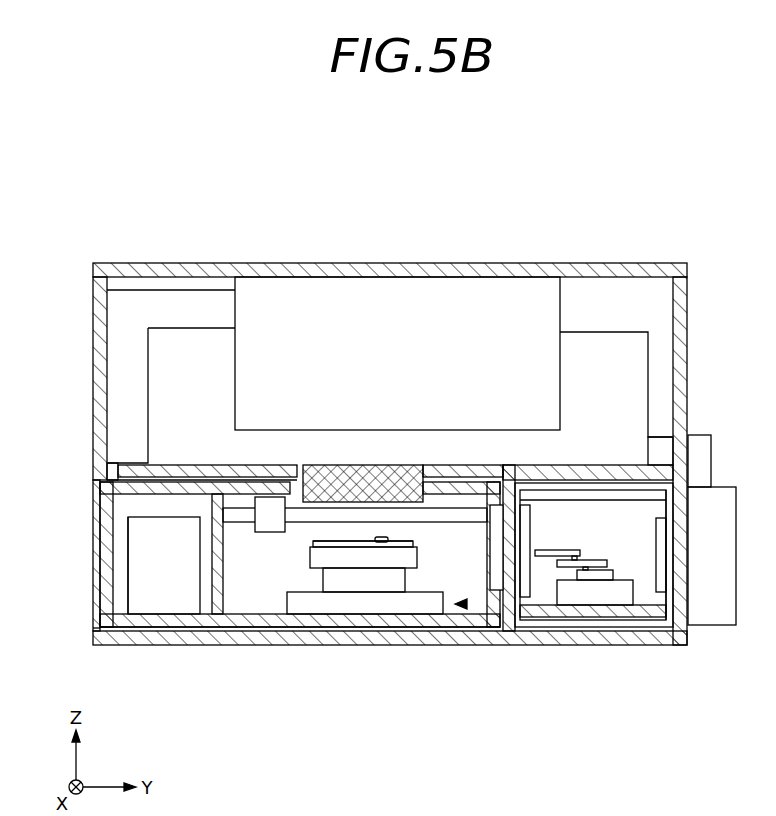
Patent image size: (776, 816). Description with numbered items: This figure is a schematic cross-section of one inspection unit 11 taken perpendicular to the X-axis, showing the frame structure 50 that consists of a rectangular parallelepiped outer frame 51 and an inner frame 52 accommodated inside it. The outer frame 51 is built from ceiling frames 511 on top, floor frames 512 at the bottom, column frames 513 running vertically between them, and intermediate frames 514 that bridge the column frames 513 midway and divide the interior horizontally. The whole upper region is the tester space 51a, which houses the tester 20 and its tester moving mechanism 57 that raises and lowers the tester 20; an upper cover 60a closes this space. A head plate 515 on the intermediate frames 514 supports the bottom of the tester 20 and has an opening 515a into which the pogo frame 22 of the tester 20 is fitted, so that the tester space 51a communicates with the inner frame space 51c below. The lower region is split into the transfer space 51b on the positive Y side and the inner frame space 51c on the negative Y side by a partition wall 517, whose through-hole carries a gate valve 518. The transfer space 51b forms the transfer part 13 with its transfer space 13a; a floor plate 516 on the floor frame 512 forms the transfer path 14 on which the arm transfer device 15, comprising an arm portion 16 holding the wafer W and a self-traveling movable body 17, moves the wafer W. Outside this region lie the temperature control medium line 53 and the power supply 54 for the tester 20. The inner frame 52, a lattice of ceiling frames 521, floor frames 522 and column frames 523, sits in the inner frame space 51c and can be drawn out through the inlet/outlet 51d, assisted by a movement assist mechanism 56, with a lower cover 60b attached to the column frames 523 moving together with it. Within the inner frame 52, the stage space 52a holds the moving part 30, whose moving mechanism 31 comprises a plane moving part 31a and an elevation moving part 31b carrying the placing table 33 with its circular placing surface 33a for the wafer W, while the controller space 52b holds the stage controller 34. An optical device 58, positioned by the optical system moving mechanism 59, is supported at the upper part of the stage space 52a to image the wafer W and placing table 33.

The inspection unit 11 is at (107, 215).
The transfer part 13 is at (586, 474).
The transfer space 13a is at (609, 596).
The transfer path 14 is at (533, 613).
The arm transfer device 15 is at (565, 692).
The arm portion 16 is at (572, 594).
The movable body 17 is at (602, 582).
The tester 20 is at (200, 345).
The pogo frame 22 is at (321, 465).
The moving part 30 is at (467, 604).
The moving mechanism 31 is at (283, 690).
The plane moving part 31a is at (300, 600).
The elevation moving part 31b is at (338, 580).
The placing table 33 is at (400, 556).
The placing surface 33a is at (380, 545).
The stage controller 34 is at (145, 540).
The frame structure 50 is at (478, 690).
The outer frame 51 is at (462, 637).
The tester space 51a is at (655, 298).
The transfer space 51b is at (668, 596).
The inner frame space 51c is at (190, 484).
The inlet/outlet 51d is at (94, 629).
The inner frame 52 is at (440, 622).
The stage space 52a is at (216, 576).
The controller space 52b is at (123, 582).
The temperature control medium line 53 is at (663, 502).
The power supply 54 is at (709, 617).
The movement assist mechanism 56 is at (128, 623).
The tester moving mechanism 57 is at (345, 350).
The optical device 58 is at (267, 533).
The optical system moving mechanism 59 is at (237, 523).
The upper cover 60a is at (94, 290).
The lower cover 60b is at (94, 627).
The ceiling frame 511 is at (503, 276).
The floor frame 512 is at (636, 638).
The column frame 513 is at (680, 356).
The intermediate frame 514 is at (623, 464).
The head plate 515 is at (276, 465).
The opening 515a is at (427, 465).
The floor plate 516 is at (592, 657).
The partition wall 517 is at (493, 505).
The gate valve 518 is at (535, 527).
The ceiling frame 521 is at (133, 488).
The floor frame 522 is at (163, 618).
The column frame 523 is at (120, 552).
The wafer W is at (357, 540).